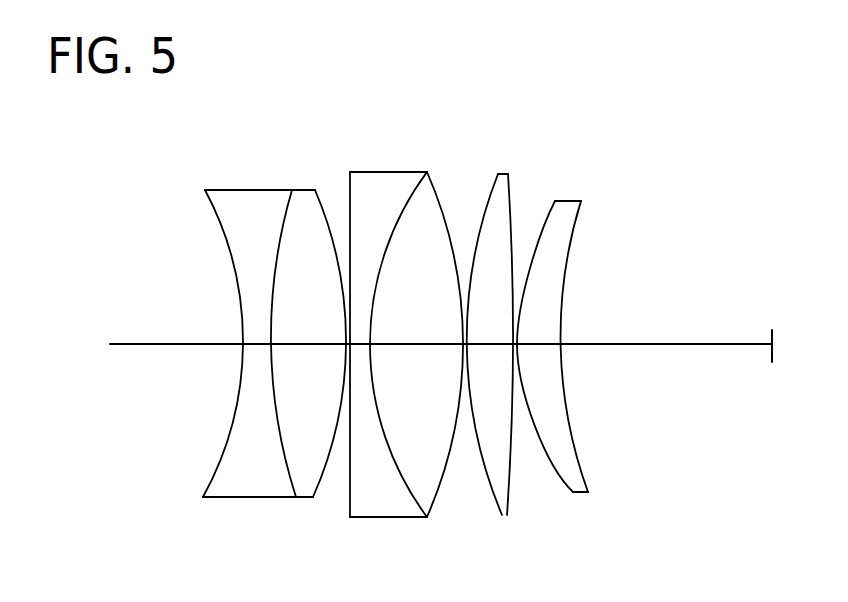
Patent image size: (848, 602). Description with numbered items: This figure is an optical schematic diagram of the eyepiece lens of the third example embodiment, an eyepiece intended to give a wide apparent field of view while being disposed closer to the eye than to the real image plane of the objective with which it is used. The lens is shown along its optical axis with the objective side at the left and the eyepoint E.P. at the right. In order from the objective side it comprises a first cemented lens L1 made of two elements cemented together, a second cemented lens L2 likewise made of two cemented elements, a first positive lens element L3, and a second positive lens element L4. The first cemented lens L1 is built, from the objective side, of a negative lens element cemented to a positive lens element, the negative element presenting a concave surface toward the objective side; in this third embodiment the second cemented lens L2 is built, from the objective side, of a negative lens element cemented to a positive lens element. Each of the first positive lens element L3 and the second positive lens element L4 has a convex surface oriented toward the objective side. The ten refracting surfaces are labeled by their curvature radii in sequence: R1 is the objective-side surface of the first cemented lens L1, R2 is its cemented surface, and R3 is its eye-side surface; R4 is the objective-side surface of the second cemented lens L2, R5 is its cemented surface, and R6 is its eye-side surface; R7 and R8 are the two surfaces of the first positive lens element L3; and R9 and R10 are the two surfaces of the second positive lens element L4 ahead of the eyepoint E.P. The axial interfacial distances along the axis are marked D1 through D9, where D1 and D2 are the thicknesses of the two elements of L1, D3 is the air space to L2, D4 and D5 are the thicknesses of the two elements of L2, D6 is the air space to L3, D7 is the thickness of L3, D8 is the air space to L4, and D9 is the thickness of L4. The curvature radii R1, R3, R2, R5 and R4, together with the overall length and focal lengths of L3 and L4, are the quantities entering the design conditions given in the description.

The curvature radius of objective-side surface of first cemented lens R1 is at (212, 207).
The curvature radius of cemented surface of first cemented lens R2 is at (292, 207).
The curvature radius of eye-side surface of first cemented lens R3 is at (316, 306).
The curvature radius of objective-side surface of second cemented lens R4 is at (350, 188).
The curvature radius of cemented surface of second cemented lens R5 is at (424, 182).
The curvature radius of sixth lens surface R6 is at (449, 297).
The curvature radius of seventh lens surface R7 is at (494, 186).
The curvature radius of eighth lens surface R8 is at (524, 307).
The curvature radius of ninth lens surface R9 is at (562, 205).
The curvature radius of tenth lens surface R10 is at (580, 512).
The interfacial distance at first surface D1 is at (257, 343).
The interfacial distance at second surface D2 is at (305, 343).
The interfacial distance at third surface D3 is at (351, 348).
The interfacial distance at fourth surface D4 is at (362, 345).
The interfacial distance at fifth surface D5 is at (402, 343).
The interfacial distance at sixth surface D6 is at (467, 346).
The interfacial distance at seventh surface D7 is at (483, 343).
The interfacial distance at eighth surface D8 is at (517, 346).
The interfacial distance at ninth surface D9 is at (539, 343).
The first cemented lens L1 is at (274, 342).
The second cemented lens L2 is at (402, 329).
The first positive lens element L3 is at (505, 344).
The second positive lens element L4 is at (580, 347).
The eyepoint E.P. is at (768, 331).